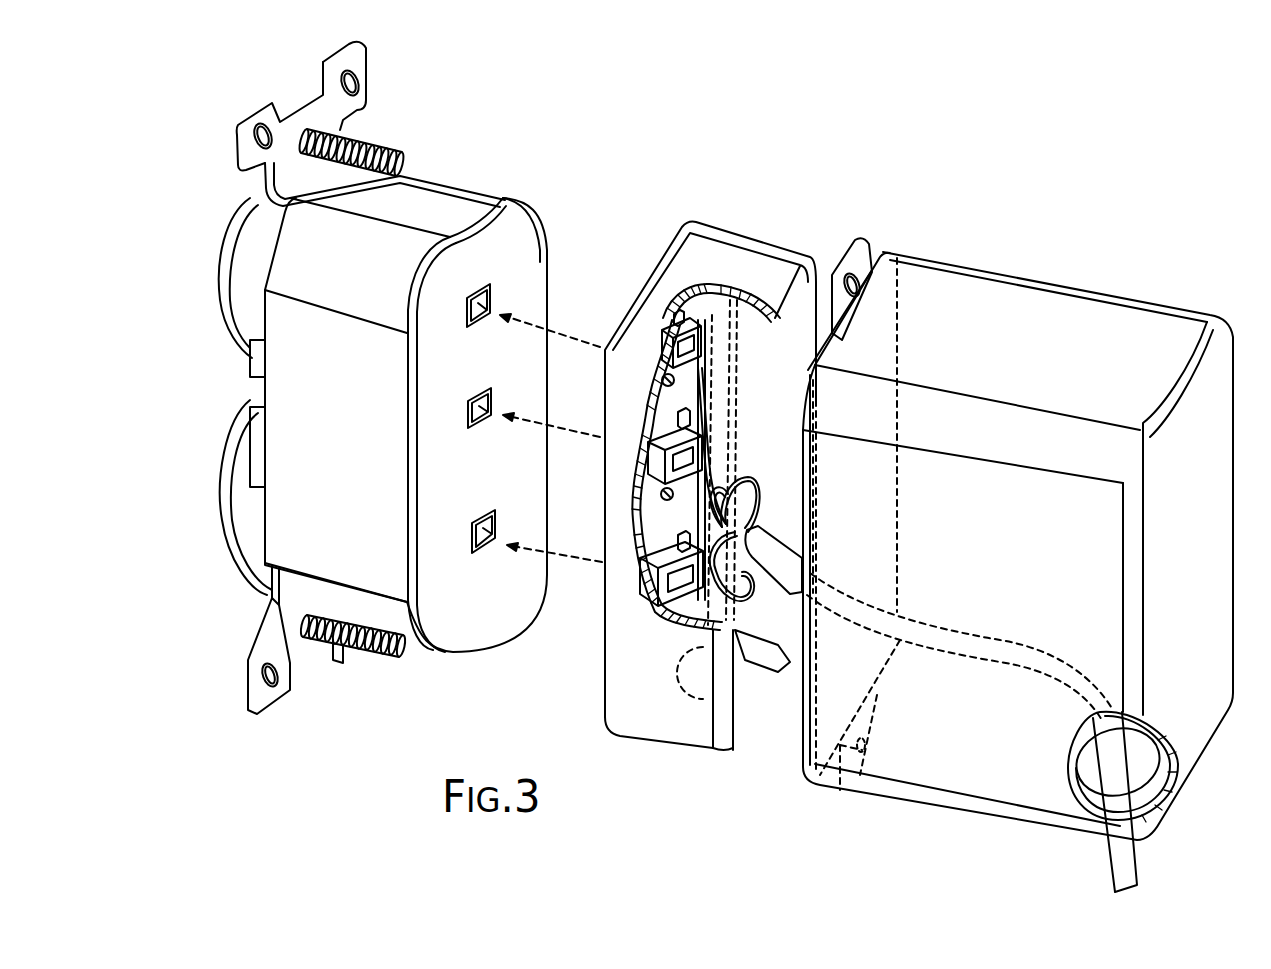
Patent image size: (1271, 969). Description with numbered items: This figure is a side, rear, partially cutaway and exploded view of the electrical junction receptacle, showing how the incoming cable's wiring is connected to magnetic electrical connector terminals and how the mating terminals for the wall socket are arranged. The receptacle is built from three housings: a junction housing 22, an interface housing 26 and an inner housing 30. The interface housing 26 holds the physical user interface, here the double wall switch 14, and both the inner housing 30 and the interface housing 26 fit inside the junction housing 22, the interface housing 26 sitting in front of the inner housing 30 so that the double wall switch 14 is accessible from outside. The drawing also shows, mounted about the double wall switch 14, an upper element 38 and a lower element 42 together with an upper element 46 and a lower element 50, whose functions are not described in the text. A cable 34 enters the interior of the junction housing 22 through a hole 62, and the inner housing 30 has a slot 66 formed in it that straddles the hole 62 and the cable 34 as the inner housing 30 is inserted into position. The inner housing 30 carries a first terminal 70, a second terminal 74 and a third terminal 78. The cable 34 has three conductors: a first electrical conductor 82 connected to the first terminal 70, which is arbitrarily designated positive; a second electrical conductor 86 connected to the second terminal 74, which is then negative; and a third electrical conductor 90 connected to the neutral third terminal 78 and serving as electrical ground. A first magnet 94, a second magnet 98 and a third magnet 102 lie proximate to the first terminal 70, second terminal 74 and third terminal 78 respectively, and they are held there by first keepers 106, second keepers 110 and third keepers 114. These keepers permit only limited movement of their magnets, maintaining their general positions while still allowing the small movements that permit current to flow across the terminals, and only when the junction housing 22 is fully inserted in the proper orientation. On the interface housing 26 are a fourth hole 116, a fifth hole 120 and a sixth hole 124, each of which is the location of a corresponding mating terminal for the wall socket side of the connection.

The double wall switch 14 is at (230, 228).
The junction housing 22 is at (990, 268).
The interface housing 26 is at (307, 383).
The inner housing 30 is at (627, 660).
The cable 34 is at (1122, 862).
The upper mounting bracket 38 is at (268, 97).
The lower mounting bracket 42 is at (268, 710).
The upper spring 46 is at (377, 146).
The lower spring 50 is at (377, 652).
The hole 62 is at (1140, 769).
The slot 66 is at (757, 688).
The first terminal 70 is at (660, 627).
The second terminal 74 is at (661, 493).
The third terminal 78 is at (662, 379).
The first electrical conductor 82 is at (740, 597).
The second electrical conductor 86 is at (728, 494).
The third electrical conductor 90 is at (757, 492).
The first magnet 94 is at (662, 600).
The second magnet 98 is at (673, 462).
The third magnet 102 is at (677, 350).
The first keepers 106 is at (670, 580).
The second keepers 110 is at (673, 440).
The third keepers 114 is at (673, 320).
The fourth hole 116 is at (484, 545).
The fifth hole 120 is at (485, 415).
The sixth hole 124 is at (485, 322).